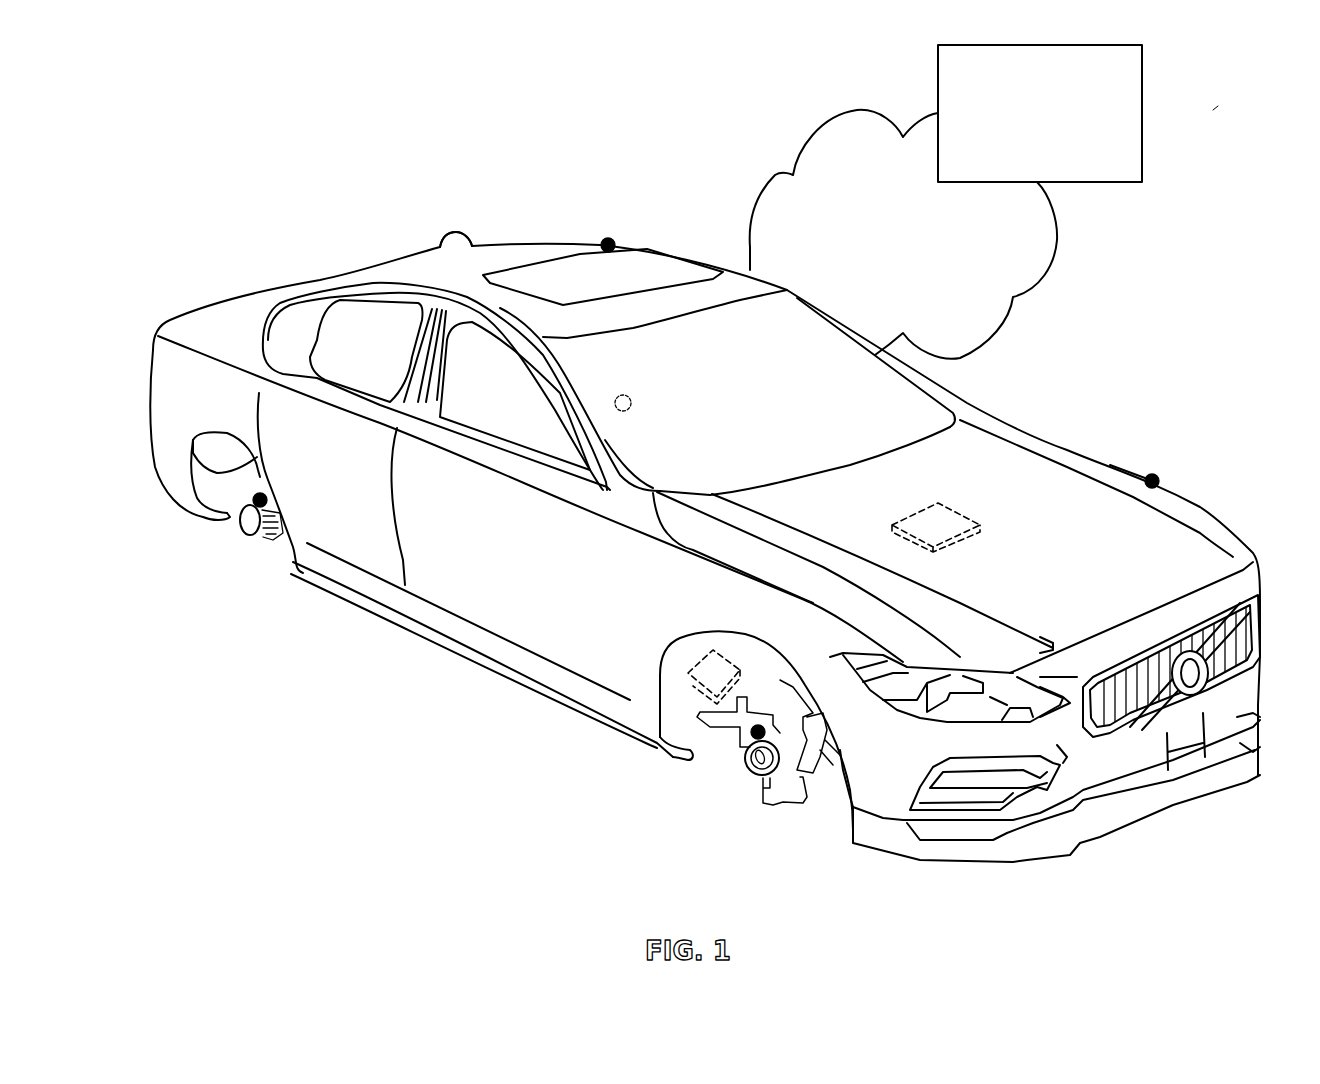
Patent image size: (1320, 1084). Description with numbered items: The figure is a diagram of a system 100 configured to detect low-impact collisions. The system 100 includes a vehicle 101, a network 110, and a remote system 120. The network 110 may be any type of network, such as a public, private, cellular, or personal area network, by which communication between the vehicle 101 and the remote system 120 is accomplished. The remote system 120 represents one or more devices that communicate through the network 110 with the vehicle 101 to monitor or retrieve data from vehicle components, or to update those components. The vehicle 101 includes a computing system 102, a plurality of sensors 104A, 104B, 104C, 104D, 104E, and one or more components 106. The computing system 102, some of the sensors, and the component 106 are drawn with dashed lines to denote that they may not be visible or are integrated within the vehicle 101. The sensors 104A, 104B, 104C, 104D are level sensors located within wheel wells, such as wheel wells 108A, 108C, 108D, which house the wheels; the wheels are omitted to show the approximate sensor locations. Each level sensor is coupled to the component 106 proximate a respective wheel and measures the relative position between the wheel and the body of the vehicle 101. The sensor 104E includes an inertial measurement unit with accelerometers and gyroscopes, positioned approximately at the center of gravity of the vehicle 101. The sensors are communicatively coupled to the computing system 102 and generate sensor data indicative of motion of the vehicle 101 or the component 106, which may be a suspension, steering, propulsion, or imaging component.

The system 100 is at (1216, 108).
The vehicle 101 is at (187, 322).
The computing system 102 is at (947, 522).
The sensor 104A is at (260, 490).
The sensor 104B is at (604, 240).
The sensor 104C is at (752, 738).
The sensor 104D is at (1160, 470).
The sensor 104E is at (628, 396).
The component 106 is at (713, 652).
The wheel well 108A is at (216, 559).
The wheel well 108C is at (738, 805).
The wheel well 108D is at (1158, 403).
The network 110 is at (903, 234).
The remote system 120 is at (1040, 113).